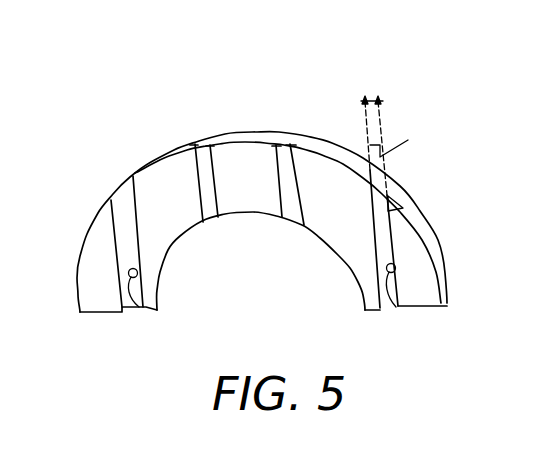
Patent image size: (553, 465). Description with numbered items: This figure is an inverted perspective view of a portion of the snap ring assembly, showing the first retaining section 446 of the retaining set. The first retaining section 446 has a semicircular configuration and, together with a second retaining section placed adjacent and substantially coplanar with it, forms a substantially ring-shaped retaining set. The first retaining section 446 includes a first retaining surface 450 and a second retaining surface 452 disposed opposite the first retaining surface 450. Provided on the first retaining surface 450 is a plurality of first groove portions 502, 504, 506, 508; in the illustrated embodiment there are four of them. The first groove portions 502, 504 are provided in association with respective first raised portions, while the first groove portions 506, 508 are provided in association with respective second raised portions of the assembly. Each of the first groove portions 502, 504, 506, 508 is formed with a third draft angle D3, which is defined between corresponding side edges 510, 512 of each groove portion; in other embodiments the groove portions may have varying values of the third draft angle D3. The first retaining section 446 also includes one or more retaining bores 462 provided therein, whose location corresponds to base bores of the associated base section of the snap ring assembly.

The first retaining section 446 is at (337, 88).
The first groove portion 506 is at (111, 200).
The first groove portion 508 is at (195, 144).
The first groove portion 504 is at (288, 148).
The first groove portion 502 is at (381, 222).
The third draft angle D3 is at (396, 145).
The side edge 512 is at (393, 203).
The second retaining surface 452 is at (450, 256).
The first retaining surface 450 is at (428, 284).
The side edge 510 is at (378, 237).
The retaining bore 462 is at (139, 307).